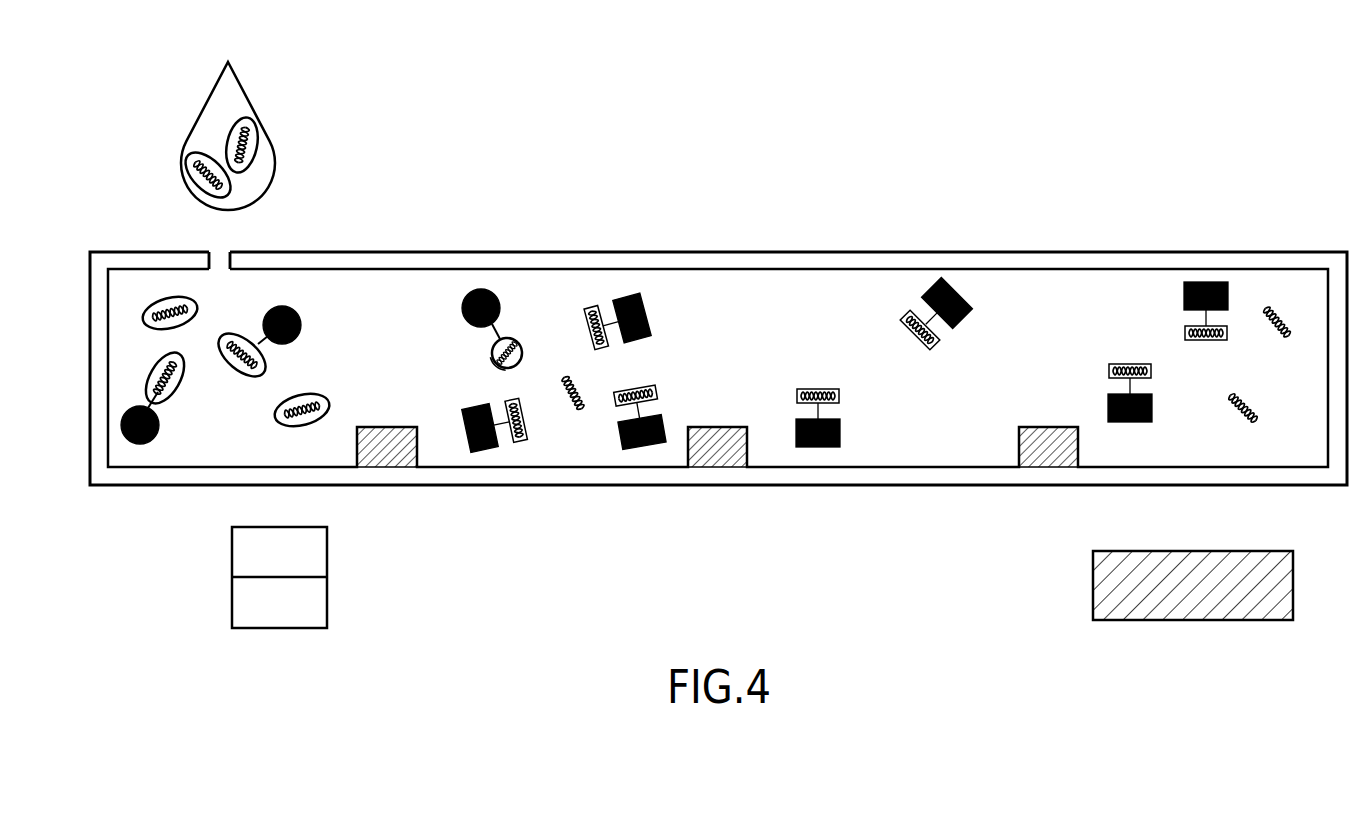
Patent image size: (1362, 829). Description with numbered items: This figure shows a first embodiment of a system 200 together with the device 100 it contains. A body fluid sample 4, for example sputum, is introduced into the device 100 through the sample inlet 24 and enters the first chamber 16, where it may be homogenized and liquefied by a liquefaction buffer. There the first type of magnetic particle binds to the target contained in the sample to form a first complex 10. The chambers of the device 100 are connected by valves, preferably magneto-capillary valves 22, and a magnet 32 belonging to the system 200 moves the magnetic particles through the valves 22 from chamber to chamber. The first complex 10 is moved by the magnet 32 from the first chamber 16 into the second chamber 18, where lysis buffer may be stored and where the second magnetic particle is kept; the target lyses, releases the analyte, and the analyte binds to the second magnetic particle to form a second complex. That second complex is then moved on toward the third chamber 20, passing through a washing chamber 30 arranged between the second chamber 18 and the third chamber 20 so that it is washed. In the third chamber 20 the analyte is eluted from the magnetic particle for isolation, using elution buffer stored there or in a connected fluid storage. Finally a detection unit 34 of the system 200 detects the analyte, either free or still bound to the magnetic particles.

The body fluid sample 4 is at (218, 136).
The first complex 10 is at (269, 373).
The first chamber 16 is at (234, 370).
The second chamber 18 is at (569, 370).
The third chamber 20 is at (1198, 326).
The magneto-capillary valve 22 is at (395, 450).
The sample inlet 24 is at (224, 263).
The washing chamber 30 is at (884, 370).
The magnet 32 is at (312, 603).
The detection unit 34 is at (1110, 600).
The device 100 is at (1254, 198).
The system 200 is at (180, 657).